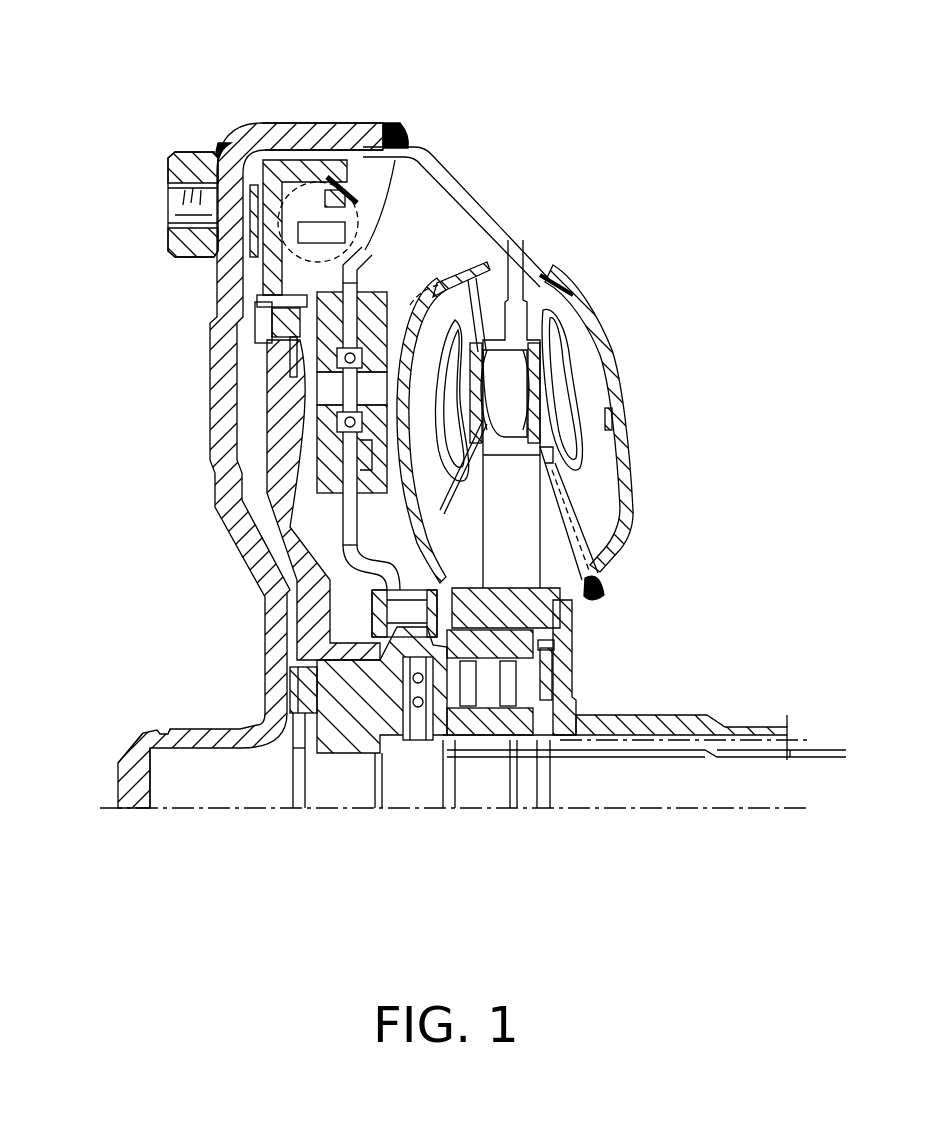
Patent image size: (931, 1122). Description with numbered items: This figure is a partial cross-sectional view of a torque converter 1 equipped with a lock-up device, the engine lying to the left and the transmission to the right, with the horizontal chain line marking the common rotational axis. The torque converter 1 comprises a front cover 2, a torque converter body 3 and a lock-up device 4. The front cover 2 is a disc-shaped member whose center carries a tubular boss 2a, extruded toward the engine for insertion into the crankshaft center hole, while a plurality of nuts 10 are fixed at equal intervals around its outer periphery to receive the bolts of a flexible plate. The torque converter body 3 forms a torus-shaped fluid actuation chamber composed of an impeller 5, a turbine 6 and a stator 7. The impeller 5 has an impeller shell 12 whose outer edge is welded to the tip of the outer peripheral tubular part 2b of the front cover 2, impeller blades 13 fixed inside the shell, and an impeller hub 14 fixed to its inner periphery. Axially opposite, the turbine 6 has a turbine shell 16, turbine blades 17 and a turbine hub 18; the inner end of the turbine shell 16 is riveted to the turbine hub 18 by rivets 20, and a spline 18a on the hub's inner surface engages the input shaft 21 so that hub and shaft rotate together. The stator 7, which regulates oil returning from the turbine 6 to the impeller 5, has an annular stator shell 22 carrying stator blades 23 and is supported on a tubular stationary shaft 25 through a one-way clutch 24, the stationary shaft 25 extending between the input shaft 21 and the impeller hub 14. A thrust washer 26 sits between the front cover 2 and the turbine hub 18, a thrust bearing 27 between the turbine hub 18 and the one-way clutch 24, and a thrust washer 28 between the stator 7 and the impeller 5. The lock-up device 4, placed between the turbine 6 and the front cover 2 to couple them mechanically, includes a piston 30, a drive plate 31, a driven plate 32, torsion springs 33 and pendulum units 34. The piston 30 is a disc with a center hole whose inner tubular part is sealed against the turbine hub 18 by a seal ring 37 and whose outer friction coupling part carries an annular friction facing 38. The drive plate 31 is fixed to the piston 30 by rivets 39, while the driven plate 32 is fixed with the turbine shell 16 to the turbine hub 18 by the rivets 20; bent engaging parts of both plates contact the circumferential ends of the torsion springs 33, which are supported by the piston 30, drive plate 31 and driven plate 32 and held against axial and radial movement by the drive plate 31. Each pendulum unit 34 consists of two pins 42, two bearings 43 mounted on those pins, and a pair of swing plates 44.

The torque converter 1 is at (116, 104).
The front cover 2 is at (207, 332).
The boss 2a is at (195, 729).
The outer peripheral tubular part 2b is at (303, 126).
The torque converter body 3 is at (471, 244).
The lock-up device 4 is at (417, 195).
The impeller 5 is at (616, 329).
The turbine 6 is at (481, 257).
The stator 7 is at (550, 523).
The nuts 10 is at (183, 153).
The impeller shell 12 is at (610, 375).
The impeller blades 13 is at (598, 457).
The impeller hub 14 is at (622, 717).
The turbine shell 16 is at (500, 272).
The turbine blades 17 is at (455, 310).
The turbine hub 18 is at (292, 765).
The spline 18a is at (352, 756).
The rivets 20 is at (381, 607).
The input shaft 21 is at (813, 762).
The stator shell 22 is at (604, 598).
The stator blades 23 is at (543, 491).
The one-way clutch 24 is at (487, 697).
The stationary shaft 25 is at (797, 740).
The thrust washer 26 is at (303, 690).
The thrust bearing 27 is at (413, 742).
The thrust washer 28 is at (566, 654).
The piston 30 is at (325, 395).
The drive plate 31 is at (260, 156).
The driven plate 32 is at (396, 126).
The torsion springs 33 is at (365, 217).
The pendulum units 34 is at (343, 437).
The seal ring 37 is at (296, 757).
The friction facing 38 is at (258, 232).
The rivets 39 is at (256, 312).
The pins 42 is at (338, 424).
The bearings 43 is at (338, 357).
The swing plates 44 is at (372, 463).